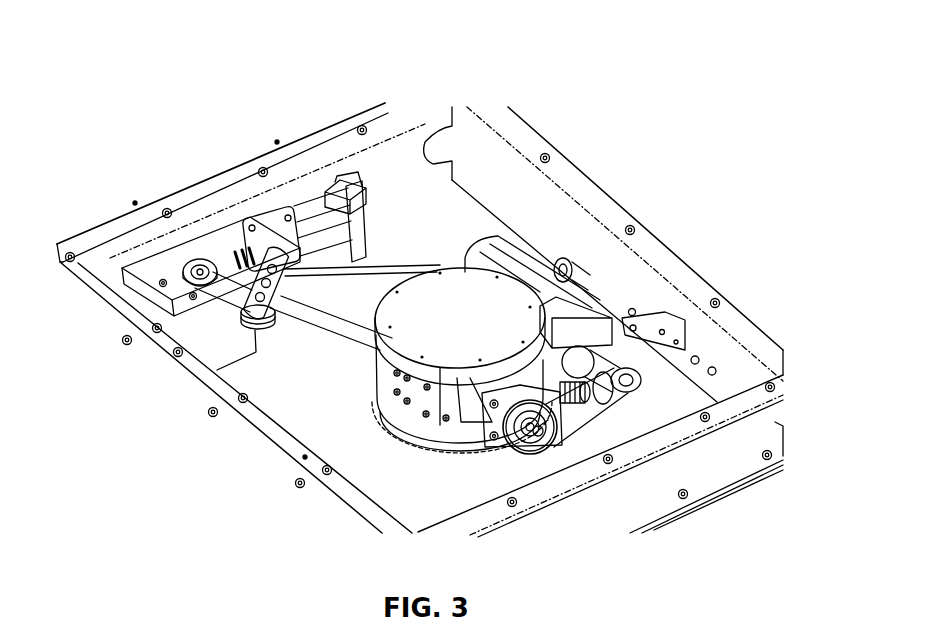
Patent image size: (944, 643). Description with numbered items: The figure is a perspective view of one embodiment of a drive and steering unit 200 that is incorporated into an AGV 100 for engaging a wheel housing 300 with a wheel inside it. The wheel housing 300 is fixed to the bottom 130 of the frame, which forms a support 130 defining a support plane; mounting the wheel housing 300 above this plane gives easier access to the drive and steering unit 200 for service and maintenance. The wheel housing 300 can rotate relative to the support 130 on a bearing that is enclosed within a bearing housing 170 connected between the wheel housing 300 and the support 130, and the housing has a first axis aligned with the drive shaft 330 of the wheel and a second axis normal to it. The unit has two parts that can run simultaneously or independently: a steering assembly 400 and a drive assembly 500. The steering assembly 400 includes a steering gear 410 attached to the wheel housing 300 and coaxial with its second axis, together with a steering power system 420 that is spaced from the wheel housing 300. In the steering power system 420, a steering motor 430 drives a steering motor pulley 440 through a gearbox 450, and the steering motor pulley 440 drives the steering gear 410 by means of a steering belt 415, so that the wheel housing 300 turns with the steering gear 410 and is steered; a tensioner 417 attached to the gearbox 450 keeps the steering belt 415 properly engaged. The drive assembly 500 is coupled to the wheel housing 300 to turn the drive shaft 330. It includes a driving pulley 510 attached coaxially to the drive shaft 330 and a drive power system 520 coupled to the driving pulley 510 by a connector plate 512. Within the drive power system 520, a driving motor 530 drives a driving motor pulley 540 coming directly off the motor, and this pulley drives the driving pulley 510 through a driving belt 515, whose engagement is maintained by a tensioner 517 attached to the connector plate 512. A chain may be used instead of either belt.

The AGV 100 is at (703, 490).
The bottom of the frame (support) 130 is at (457, 203).
The bearing housing 170 is at (438, 428).
The drive and steering unit 200 is at (193, 435).
The wheel housing 300 is at (418, 403).
The drive shaft 330 is at (540, 433).
The steering assembly 400 is at (418, 223).
The steering gear 410 is at (455, 282).
The steering belt 415 is at (380, 355).
The tensioner 417 is at (268, 293).
The steering power system 420 is at (291, 190).
The steering motor 430 is at (333, 227).
The steering motor pulley 440 is at (200, 267).
The gearbox 450 is at (148, 287).
The drive assembly 500 is at (658, 178).
The driving pulley 510 is at (517, 445).
The connector plate 512 is at (492, 420).
The driving belt 515 is at (603, 395).
The tensioner 517 is at (587, 395).
The drive power system 520 is at (588, 250).
The driving motor 530 is at (517, 257).
The driving motor pulley 540 is at (640, 380).